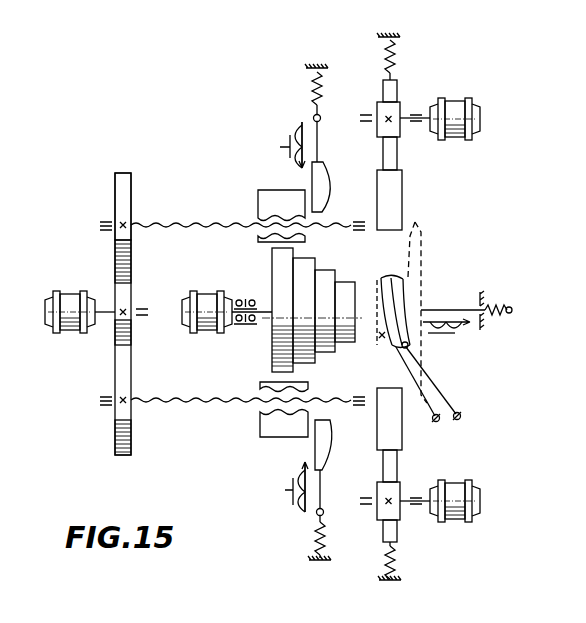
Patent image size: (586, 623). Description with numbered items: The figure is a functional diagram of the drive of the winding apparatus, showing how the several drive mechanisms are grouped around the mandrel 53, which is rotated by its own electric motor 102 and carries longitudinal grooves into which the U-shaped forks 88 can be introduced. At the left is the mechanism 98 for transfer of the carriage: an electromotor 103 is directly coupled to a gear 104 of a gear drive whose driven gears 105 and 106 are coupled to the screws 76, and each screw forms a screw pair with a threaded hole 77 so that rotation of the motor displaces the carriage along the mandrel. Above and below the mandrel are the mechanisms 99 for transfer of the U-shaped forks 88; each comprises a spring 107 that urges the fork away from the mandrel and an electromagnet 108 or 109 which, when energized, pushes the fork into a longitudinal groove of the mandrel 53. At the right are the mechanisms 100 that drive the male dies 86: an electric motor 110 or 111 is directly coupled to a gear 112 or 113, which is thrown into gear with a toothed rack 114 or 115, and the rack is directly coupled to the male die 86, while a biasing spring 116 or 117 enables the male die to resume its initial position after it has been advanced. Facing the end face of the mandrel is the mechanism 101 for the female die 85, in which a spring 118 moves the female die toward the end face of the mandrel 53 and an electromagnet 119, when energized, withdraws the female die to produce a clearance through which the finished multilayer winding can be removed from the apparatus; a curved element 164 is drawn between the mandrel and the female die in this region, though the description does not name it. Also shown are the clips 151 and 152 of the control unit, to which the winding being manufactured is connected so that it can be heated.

The mandrel 53 is at (345, 271).
The screw 76 is at (185, 222).
The threaded hole 77 is at (258, 215).
The female die 85 is at (418, 294).
The male die 86 is at (402, 196).
The U-shaped fork 88 is at (322, 183).
The mechanism for transfer of the carriage 98 is at (105, 364).
The mechanism for transfer of the U-shaped fork 99 is at (281, 116).
The mechanism to drive the male die 100 is at (443, 56).
The mechanism to drive the female die 101 is at (461, 278).
The electric motor for the mandrel 102 is at (203, 292).
The electromotor 103 is at (72, 292).
The gear 104 is at (128, 290).
The driven gear 105 is at (117, 190).
The driven gear 106 is at (131, 437).
The spring 107 is at (314, 100).
The electromagnet 108 is at (280, 145).
The electromagnet 109 is at (283, 487).
The electric motor 110 is at (455, 98).
The electric motor 111 is at (480, 497).
The gear 112 is at (377, 112).
The gear 113 is at (378, 512).
The toothed rack 114 is at (395, 90).
The toothed rack 115 is at (397, 533).
The spring 116 is at (388, 68).
The spring 117 is at (393, 556).
The spring 118 is at (495, 322).
The electromagnet 119 is at (448, 335).
The clip 151 is at (425, 398).
The clip 152 is at (447, 398).
The curved band 164 is at (385, 317).